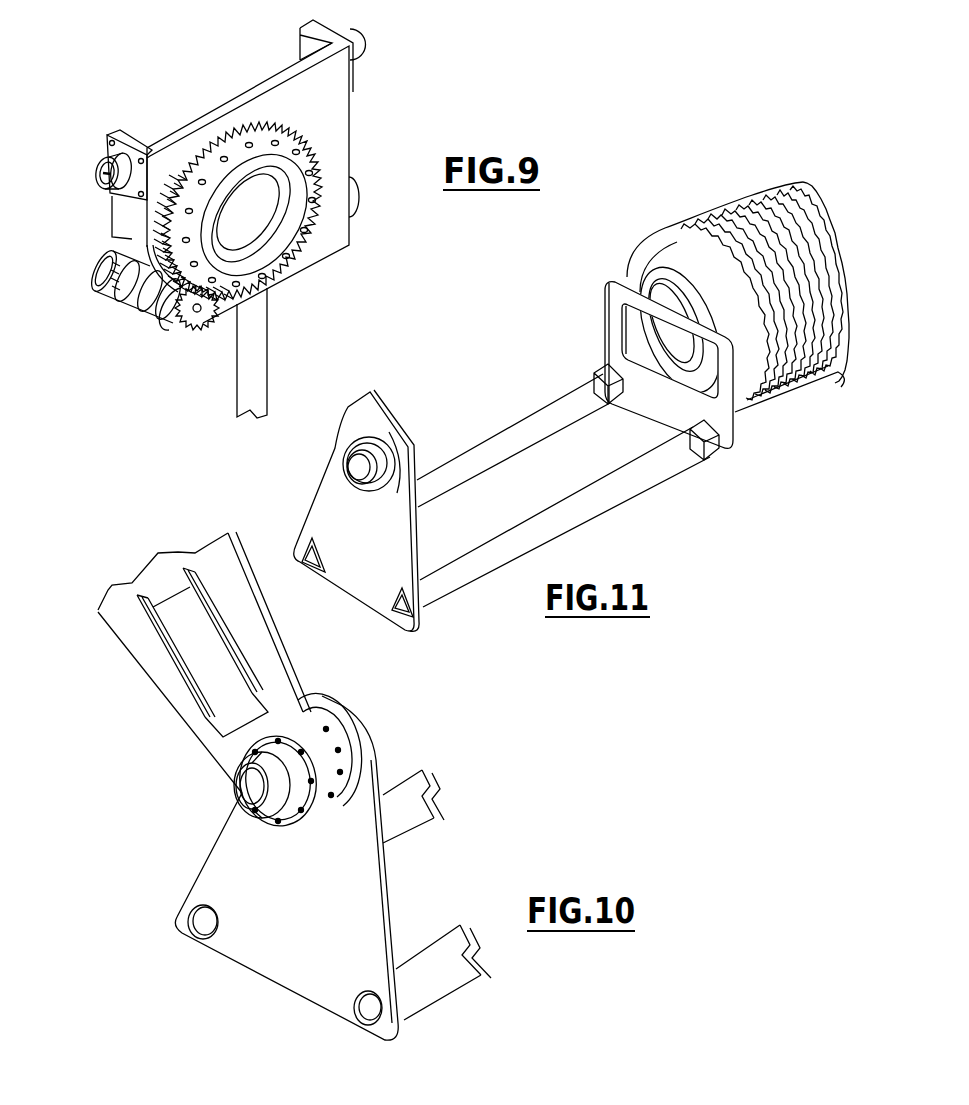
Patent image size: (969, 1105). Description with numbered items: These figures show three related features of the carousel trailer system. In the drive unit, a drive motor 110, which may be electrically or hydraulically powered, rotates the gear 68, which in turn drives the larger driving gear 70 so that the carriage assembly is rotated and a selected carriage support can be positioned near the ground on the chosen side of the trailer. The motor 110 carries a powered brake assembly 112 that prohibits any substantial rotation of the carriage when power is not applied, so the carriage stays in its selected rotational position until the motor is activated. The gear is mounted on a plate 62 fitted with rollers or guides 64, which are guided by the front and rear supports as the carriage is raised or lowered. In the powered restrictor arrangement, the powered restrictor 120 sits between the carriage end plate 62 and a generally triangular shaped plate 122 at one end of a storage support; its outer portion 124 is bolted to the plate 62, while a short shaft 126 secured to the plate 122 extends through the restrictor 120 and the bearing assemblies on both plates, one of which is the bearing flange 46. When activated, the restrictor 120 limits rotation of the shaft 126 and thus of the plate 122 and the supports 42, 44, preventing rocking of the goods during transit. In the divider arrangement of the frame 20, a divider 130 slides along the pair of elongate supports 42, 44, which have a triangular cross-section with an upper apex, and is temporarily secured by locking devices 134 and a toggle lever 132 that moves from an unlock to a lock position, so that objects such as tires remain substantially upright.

In FIG. 11, the conveyor frame assembly 20 is at (462, 382).
In FIG. 11, the carriage support 42 is at (490, 438).
In FIG. 11, the carriage support 44 is at (607, 512).
In FIG. 10, the bearing flange 46 is at (242, 751).
In FIG. 9, the carriage end plate 62 is at (328, 105).
In FIG. 10, the carriage end plate 62 is at (137, 637).
In FIG. 9, the roller guide 64 is at (98, 163).
In FIG. 9, the gear 68 is at (203, 330).
In FIG. 9, the driving gear 70 is at (312, 156).
In FIG. 9, the drive motor 110 is at (142, 315).
In FIG. 9, the powered brake assembly 112 is at (102, 278).
In FIG. 10, the powered restrictor 120 is at (300, 708).
In FIG. 10, the triangular shaped plate 122 is at (322, 895).
In FIG. 10, the outer portion of powered restrictor 124 is at (337, 753).
In FIG. 10, the short shaft 126 is at (236, 774).
In FIG. 11, the divider 130 is at (615, 297).
In FIG. 11, the toggle lever 132 is at (733, 418).
In FIG. 11, the locking device 134 is at (600, 372).